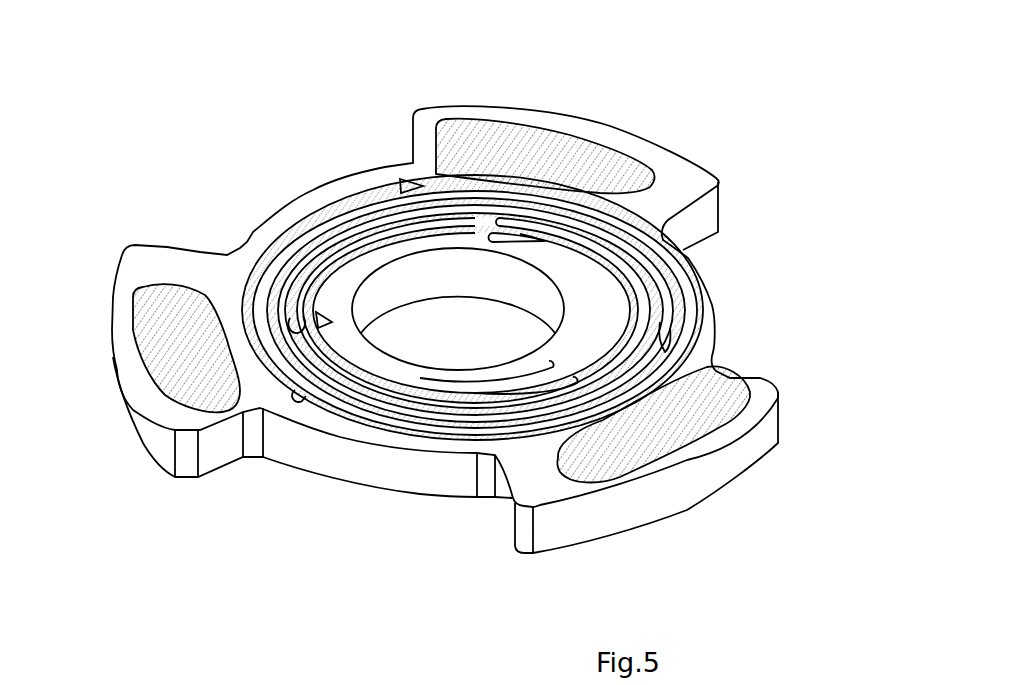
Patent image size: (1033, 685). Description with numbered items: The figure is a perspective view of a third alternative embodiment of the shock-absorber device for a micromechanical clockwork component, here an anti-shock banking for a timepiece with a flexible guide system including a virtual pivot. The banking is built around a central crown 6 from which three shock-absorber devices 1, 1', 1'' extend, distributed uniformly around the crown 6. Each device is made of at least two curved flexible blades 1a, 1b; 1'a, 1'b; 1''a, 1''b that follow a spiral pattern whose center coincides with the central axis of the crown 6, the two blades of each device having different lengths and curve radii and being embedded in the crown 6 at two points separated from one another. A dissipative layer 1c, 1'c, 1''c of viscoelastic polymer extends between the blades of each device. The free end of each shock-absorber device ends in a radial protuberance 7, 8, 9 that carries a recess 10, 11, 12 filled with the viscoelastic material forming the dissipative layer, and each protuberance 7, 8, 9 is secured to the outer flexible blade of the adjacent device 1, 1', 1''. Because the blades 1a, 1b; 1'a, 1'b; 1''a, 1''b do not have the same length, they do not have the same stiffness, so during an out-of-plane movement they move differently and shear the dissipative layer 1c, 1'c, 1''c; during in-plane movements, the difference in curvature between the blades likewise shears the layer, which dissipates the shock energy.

The shock-absorber device 1 is at (472, 382).
The curved flexible blade 1a is at (365, 430).
The curved flexible blade 1b is at (427, 438).
The dissipative layer 1c is at (407, 442).
The shock-absorber device 1' is at (702, 270).
The curved flexible blade 1'a is at (734, 350).
The curved flexible blade 1'b is at (729, 301).
The dissipative layer 1'c is at (727, 333).
The shock-absorber device 1'' is at (234, 199).
The curved flexible blade 1''a is at (271, 189).
The curved flexible blade 1''b is at (348, 168).
The dissipative layer 1''c is at (314, 170).
The central crown 6 is at (367, 340).
The radial protuberance 7 is at (420, 110).
The radial protuberance 8 is at (130, 262).
The radial protuberance 9 is at (540, 483).
The recess 10 is at (545, 155).
The recess 11 is at (177, 353).
The recess 12 is at (663, 437).